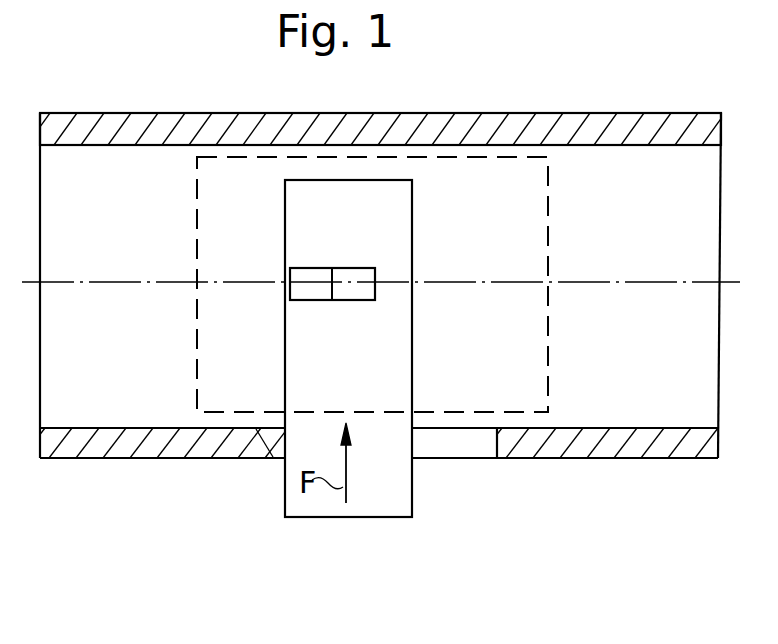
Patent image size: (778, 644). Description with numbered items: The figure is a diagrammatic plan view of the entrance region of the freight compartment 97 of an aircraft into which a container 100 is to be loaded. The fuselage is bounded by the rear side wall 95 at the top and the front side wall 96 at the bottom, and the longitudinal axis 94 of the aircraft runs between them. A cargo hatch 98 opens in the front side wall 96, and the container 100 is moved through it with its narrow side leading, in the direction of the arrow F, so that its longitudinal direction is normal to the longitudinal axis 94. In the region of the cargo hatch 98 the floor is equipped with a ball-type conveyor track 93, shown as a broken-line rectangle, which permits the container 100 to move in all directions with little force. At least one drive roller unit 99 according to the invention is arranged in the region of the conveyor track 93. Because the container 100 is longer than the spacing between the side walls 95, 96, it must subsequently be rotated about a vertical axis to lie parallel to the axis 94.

The ball-type conveyor track 93 is at (551, 224).
The longitudinal axis 94 is at (623, 283).
The rear side wall 95 is at (620, 113).
The front side wall 96 is at (619, 440).
The freight compartment 97 is at (111, 393).
The cargo hatch 98 is at (465, 440).
The drive roller unit 99 is at (338, 268).
The container 100 is at (400, 340).